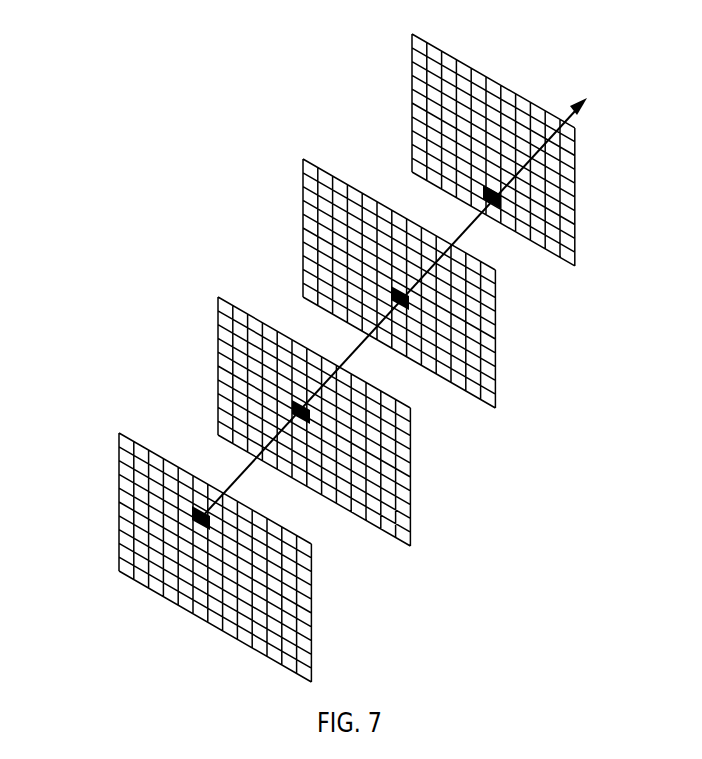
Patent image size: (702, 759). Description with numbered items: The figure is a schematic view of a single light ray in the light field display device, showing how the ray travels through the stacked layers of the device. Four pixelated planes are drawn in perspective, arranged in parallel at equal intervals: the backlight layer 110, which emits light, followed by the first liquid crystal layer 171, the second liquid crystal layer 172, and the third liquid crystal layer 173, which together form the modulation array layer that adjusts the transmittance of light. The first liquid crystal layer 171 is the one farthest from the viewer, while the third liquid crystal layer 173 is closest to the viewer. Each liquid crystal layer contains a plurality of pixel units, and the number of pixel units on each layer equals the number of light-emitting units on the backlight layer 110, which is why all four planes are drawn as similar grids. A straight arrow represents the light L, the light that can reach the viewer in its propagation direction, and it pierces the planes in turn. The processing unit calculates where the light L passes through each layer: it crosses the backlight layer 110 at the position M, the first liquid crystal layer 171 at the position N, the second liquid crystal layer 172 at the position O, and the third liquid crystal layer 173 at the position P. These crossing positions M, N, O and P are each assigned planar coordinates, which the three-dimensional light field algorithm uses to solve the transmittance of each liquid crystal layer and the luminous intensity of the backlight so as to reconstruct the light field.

The backlight layer 110 is at (168, 601).
The first liquid crystal layer 171 is at (218, 337).
The second liquid crystal layer 172 is at (303, 207).
The third liquid crystal layer 173 is at (412, 78).
The light L is at (566, 107).
The position where the light passes through the backlight layer M is at (179, 513).
The position where the light passes through the first liquid crystal layer N is at (279, 405).
The position where the light passes through the second liquid crystal layer O is at (378, 290).
The position where the light passes through the third liquid crystal layer P is at (473, 190).